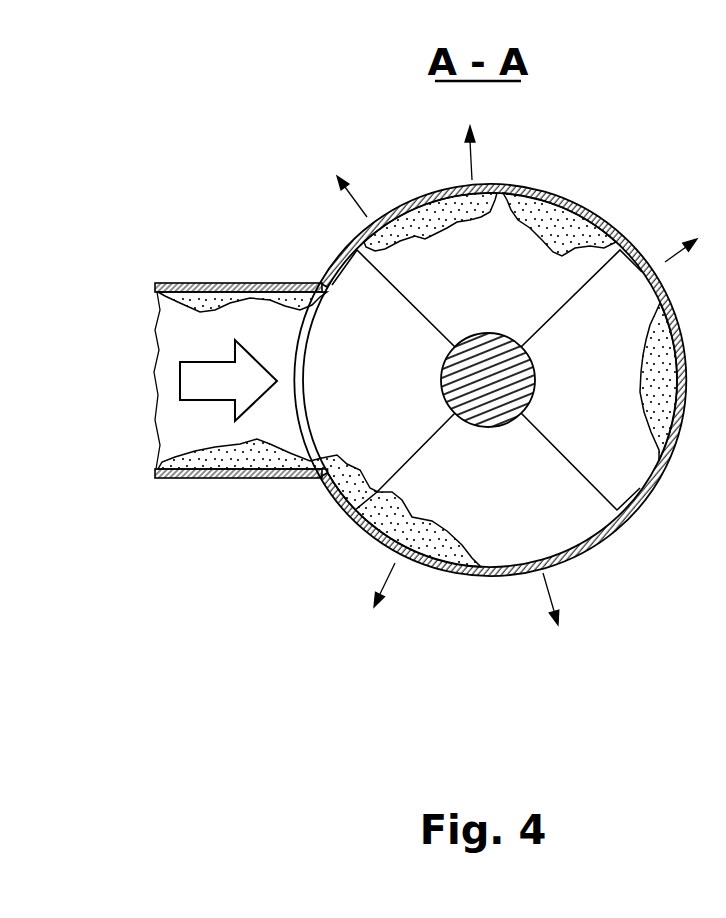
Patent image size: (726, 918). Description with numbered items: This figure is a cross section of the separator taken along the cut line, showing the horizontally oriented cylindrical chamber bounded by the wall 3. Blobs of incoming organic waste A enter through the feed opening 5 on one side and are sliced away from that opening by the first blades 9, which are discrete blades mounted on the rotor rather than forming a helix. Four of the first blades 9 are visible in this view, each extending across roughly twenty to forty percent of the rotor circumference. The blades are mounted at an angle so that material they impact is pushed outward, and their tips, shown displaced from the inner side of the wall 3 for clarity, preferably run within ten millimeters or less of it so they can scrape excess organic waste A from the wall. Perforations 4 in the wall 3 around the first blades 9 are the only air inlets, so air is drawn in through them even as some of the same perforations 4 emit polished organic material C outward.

The wall 3 is at (418, 193).
The perforations 4 is at (575, 210).
The feed opening 5 is at (208, 283).
The first blades 9 is at (352, 300).
The polished organic material C is at (352, 202).
The organic waste A is at (214, 382).